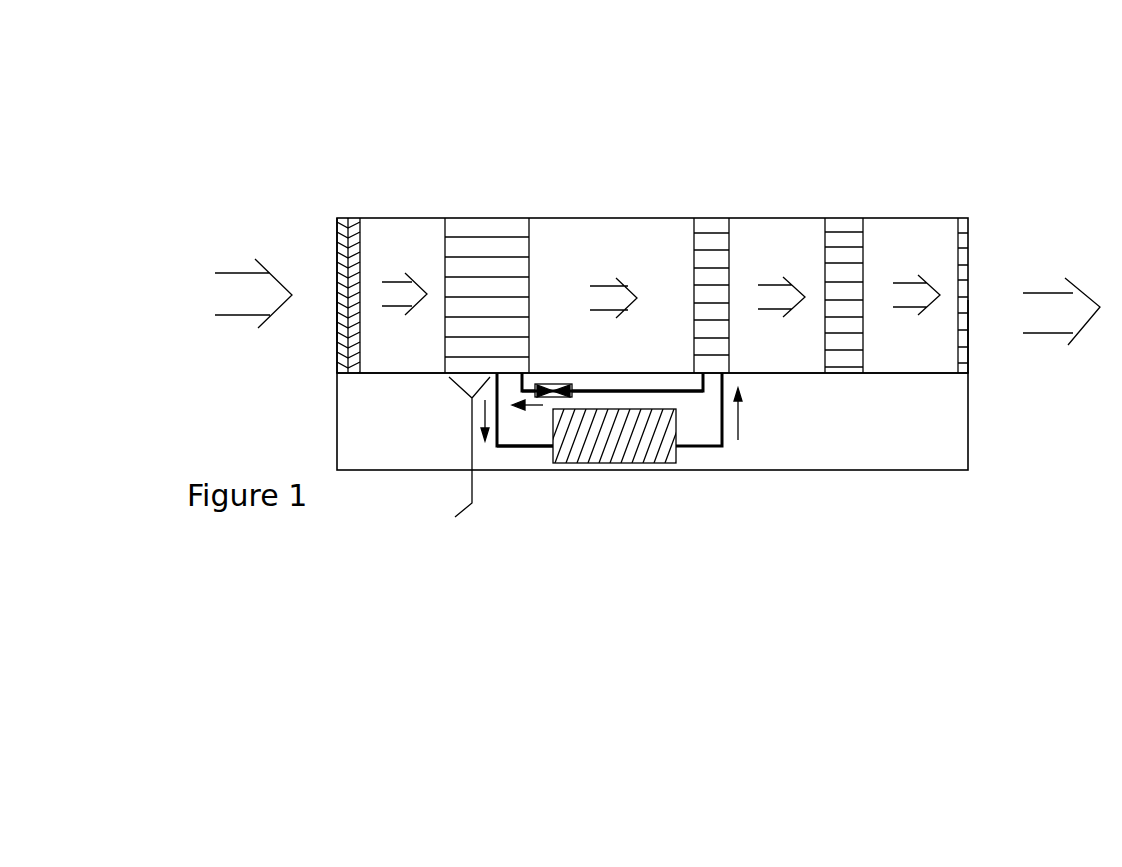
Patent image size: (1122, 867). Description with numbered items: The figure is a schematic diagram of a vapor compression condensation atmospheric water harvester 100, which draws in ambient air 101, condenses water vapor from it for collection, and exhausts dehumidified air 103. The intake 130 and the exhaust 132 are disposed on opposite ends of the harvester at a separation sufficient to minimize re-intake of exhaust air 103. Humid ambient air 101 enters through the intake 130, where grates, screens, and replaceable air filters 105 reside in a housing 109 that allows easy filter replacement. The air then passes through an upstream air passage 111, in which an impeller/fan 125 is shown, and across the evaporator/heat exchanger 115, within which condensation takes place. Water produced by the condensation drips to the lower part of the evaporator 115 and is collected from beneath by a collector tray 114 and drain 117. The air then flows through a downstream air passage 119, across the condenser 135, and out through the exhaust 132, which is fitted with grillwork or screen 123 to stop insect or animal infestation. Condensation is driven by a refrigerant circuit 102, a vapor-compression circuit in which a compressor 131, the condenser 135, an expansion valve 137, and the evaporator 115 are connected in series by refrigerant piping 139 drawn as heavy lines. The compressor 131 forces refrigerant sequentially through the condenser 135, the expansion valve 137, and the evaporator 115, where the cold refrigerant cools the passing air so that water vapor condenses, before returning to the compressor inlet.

The atmospheric water harvester 100 is at (585, 170).
The ambient air 101 is at (232, 303).
The refrigerant circuit 102 is at (700, 448).
The dehumidified air 103 is at (1041, 324).
The replaceable air filters 105 is at (342, 253).
The housing 109 is at (353, 228).
The upstream air passage 111 is at (440, 197).
The collector tray 114 is at (460, 390).
The evaporator 115 is at (468, 228).
The drain 117 is at (468, 482).
The downstream air passage 119 is at (962, 200).
The grillwork and/or screen 123 is at (960, 242).
The impeller/fan 125 is at (845, 275).
The intake 130 is at (315, 316).
The compressor 131 is at (618, 455).
The exhaust 132 is at (980, 352).
The condenser 135 is at (702, 290).
The expansion valve 137 is at (552, 382).
The refrigerant piping 139 is at (640, 390).